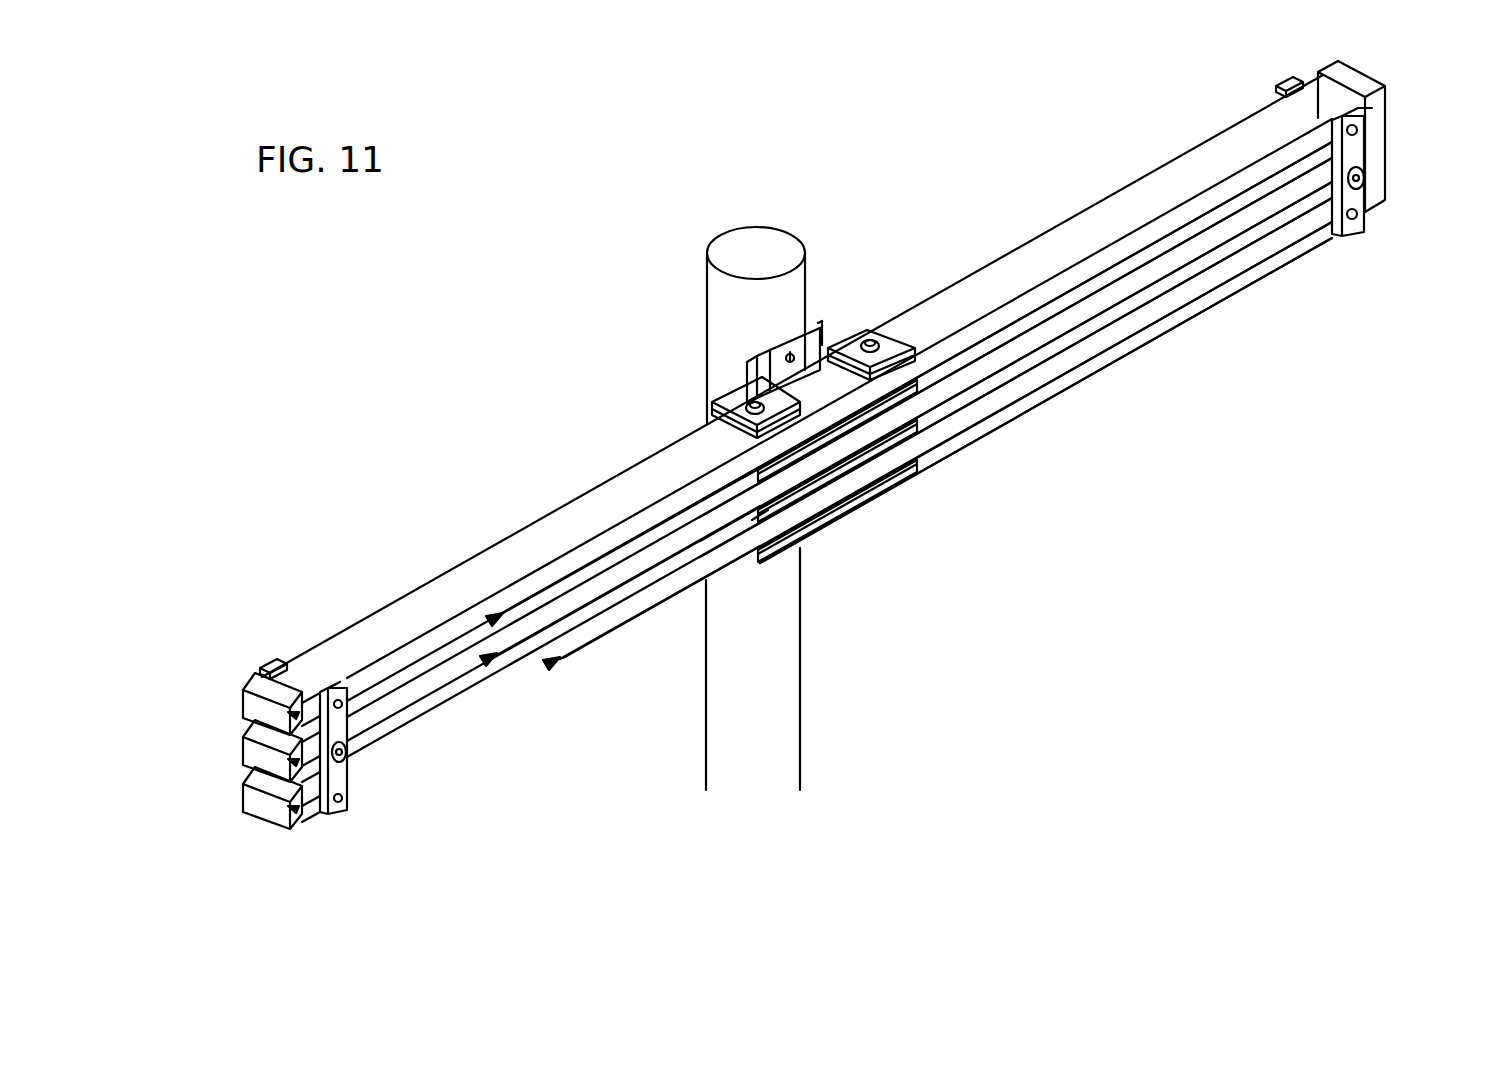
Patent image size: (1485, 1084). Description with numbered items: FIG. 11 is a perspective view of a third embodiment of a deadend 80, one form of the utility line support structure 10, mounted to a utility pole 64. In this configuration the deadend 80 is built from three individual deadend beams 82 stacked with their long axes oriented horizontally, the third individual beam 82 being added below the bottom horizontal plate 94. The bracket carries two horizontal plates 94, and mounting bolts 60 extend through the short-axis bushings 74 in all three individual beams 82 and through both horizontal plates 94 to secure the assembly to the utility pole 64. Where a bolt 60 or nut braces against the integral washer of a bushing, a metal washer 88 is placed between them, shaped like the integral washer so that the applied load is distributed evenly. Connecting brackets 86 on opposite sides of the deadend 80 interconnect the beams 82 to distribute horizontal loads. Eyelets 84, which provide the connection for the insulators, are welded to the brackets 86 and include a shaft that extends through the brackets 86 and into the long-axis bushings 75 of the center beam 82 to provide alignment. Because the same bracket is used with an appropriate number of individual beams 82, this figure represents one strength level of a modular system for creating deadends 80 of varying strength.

The utility line support structure 10 is at (452, 398).
The mounting bolt 60 is at (1362, 176).
The utility pole 64 is at (802, 722).
The short-axis bushing 74 is at (931, 471).
The long-axis bushing 75 is at (288, 812).
The deadend 80 is at (1000, 234).
The individual deadend beam 82 is at (556, 665).
The eyelet 84 is at (1327, 205).
The connecting bracket 86 is at (1268, 82).
The metal washer 88 is at (885, 352).
The horizontal plate 94 is at (757, 513).